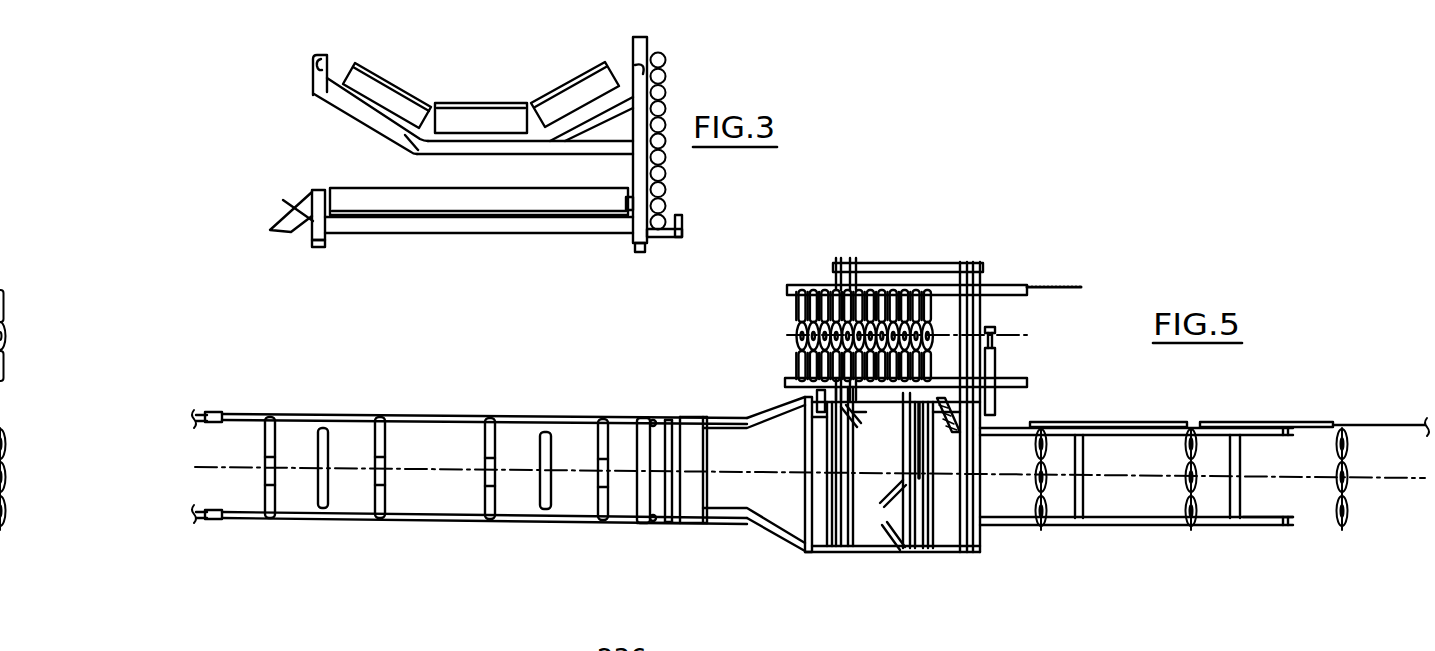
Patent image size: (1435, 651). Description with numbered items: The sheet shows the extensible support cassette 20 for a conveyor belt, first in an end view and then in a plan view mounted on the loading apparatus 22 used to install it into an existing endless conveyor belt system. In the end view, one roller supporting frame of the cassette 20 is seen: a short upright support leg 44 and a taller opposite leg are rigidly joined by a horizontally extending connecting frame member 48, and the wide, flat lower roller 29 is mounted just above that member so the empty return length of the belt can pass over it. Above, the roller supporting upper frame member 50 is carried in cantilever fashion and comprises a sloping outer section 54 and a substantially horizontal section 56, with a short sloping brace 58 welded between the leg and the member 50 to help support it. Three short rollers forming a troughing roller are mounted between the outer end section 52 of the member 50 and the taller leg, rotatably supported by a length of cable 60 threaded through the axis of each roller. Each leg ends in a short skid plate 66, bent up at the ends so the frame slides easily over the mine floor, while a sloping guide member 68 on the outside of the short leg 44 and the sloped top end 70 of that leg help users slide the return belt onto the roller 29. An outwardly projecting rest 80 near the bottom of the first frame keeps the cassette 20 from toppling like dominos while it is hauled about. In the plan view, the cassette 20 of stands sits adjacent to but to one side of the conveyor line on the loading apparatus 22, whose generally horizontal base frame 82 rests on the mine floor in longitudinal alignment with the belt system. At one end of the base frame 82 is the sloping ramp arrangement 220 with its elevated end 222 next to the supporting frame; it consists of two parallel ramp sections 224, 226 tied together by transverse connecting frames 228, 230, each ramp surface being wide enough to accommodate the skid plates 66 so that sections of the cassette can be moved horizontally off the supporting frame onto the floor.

In FIG. 3, the extensible support cassette 20 is at (498, 94).
In FIG. 5, the extensible support cassette 20 is at (800, 333).
In FIG. 5, the loading apparatus 22 is at (937, 537).
In FIG. 3, the lower roller 29 is at (473, 197).
In FIG. 3, the support leg 44 is at (285, 198).
In FIG. 3, the connecting frame member 48 is at (493, 228).
In FIG. 3, the roller supporting upper frame member 50 is at (407, 140).
In FIG. 3, the outer end section 52 is at (312, 75).
In FIG. 3, the sloping outer section 54 is at (353, 112).
In FIG. 3, the horizontal section 56 is at (501, 154).
In FIG. 3, the brace 58 is at (588, 126).
In FIG. 3, the cable 60 is at (409, 141).
In FIG. 3, the skid plate 66 is at (325, 247).
In FIG. 3, the sloping guide member 68 is at (283, 216).
In FIG. 3, the top end of the leg 70 is at (318, 192).
In FIG. 3, the rest 80 is at (684, 223).
In FIG. 5, the base frame 82 is at (818, 553).
In FIG. 5, the sloping ramp arrangement 220 is at (1138, 528).
In FIG. 5, the elevated end 222 is at (1062, 427).
In FIG. 5, the ramp section 224 is at (1217, 427).
In FIG. 5, the ramp section 226 is at (1243, 528).
In FIG. 5, the connecting frame 228 is at (1082, 467).
In FIG. 5, the connecting frame 230 is at (673, 523).